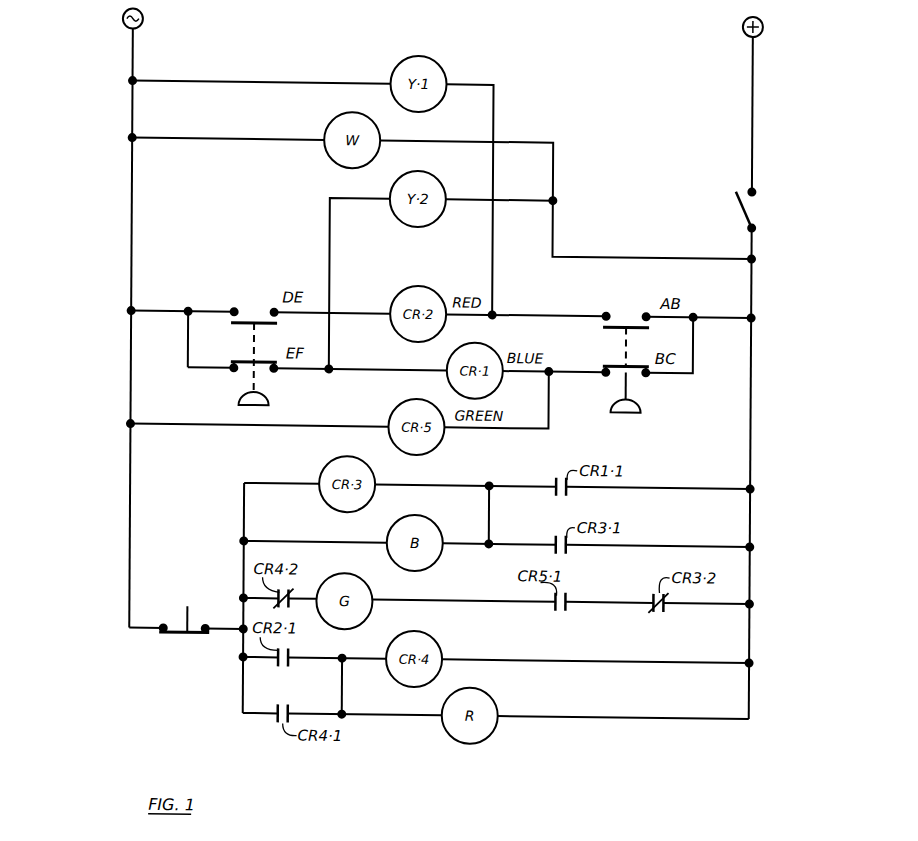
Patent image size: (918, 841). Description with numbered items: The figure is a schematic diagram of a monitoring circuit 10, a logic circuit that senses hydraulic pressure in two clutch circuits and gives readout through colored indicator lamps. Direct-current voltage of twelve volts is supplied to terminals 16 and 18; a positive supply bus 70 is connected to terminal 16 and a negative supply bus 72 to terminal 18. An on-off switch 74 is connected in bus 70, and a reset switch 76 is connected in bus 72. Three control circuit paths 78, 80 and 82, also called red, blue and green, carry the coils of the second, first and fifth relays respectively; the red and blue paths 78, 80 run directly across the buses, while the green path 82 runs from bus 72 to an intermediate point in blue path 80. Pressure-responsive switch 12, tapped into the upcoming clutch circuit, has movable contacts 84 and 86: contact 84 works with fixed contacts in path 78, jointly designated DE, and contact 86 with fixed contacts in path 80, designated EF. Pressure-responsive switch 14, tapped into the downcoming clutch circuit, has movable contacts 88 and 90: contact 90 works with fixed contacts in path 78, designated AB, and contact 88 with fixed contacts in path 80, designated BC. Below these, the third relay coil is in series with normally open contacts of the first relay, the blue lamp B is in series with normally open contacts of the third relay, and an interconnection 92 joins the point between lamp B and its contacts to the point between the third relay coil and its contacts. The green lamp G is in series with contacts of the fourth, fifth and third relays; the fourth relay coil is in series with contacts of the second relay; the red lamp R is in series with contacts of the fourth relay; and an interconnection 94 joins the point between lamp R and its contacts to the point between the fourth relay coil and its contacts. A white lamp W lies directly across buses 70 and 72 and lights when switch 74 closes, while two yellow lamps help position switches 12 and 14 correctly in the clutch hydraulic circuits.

The monitoring circuit 10 is at (106, 353).
The pressure-responsive switch 12 is at (269, 394).
The pressure-responsive switch 14 is at (636, 393).
The terminal 16 is at (761, 14).
The terminal 18 is at (141, 12).
The positive supply bus 70 is at (754, 396).
The negative supply bus 72 is at (133, 271).
The on-off switch 74 is at (741, 201).
The reset switch 76 is at (191, 606).
The red control circuit path 78 is at (546, 286).
The blue control circuit path 80 is at (544, 371).
The green control circuit path 82 is at (525, 424).
The movable contact 84 is at (258, 315).
The movable contact 86 is at (247, 357).
The movable contact 88 is at (614, 359).
The movable contact 90 is at (632, 318).
The interconnection 92 is at (493, 505).
The interconnection 94 is at (347, 671).